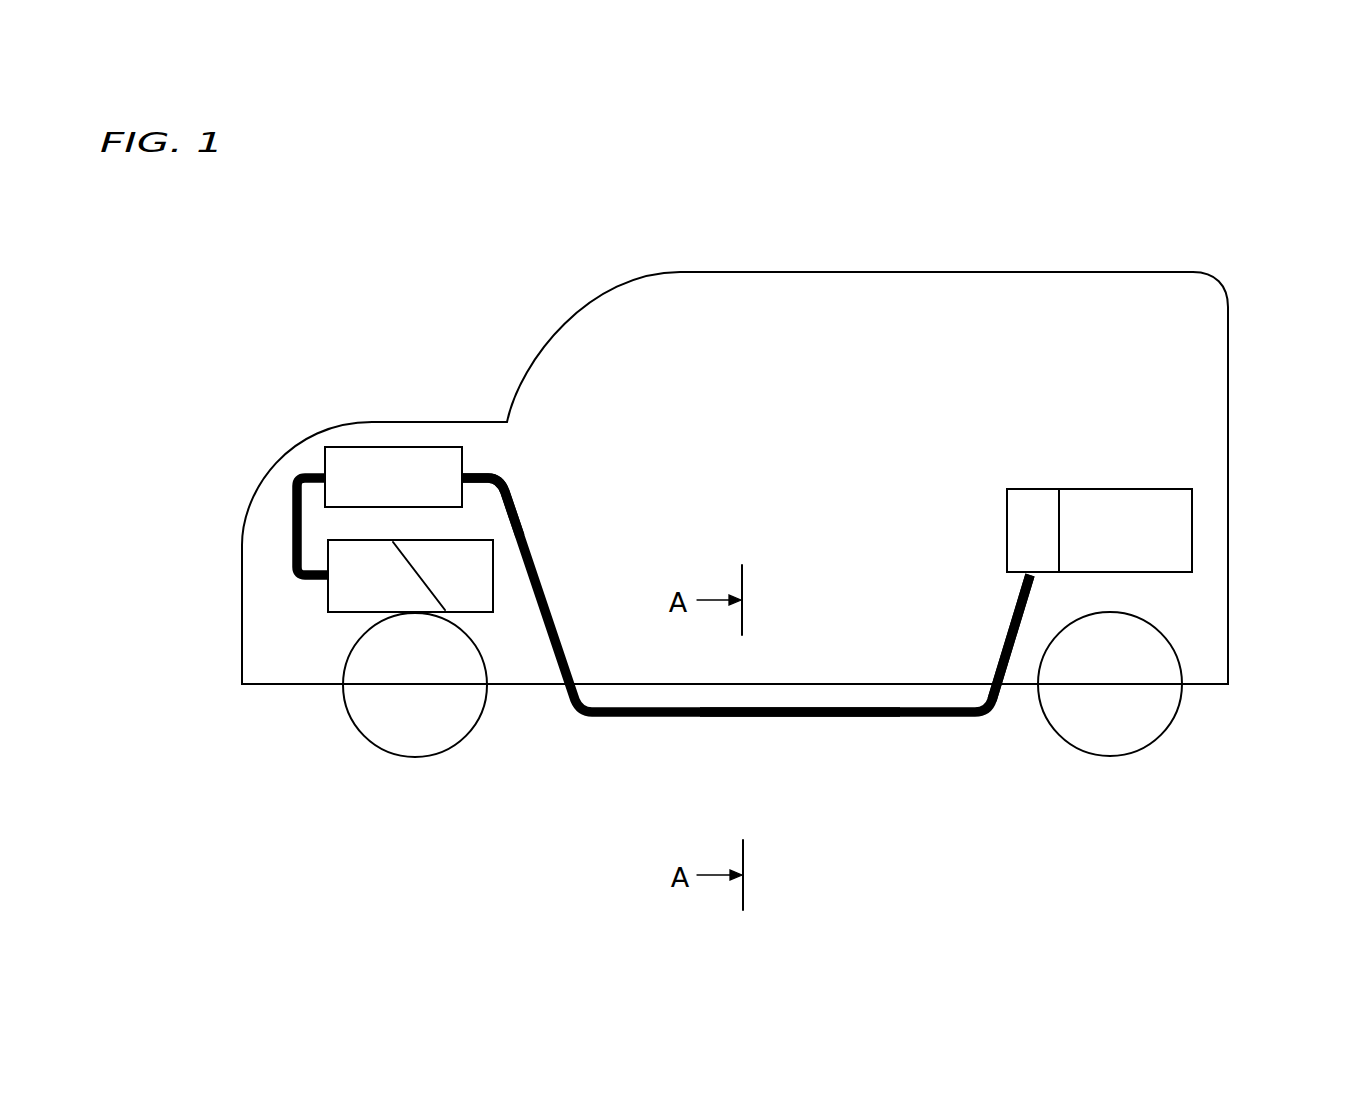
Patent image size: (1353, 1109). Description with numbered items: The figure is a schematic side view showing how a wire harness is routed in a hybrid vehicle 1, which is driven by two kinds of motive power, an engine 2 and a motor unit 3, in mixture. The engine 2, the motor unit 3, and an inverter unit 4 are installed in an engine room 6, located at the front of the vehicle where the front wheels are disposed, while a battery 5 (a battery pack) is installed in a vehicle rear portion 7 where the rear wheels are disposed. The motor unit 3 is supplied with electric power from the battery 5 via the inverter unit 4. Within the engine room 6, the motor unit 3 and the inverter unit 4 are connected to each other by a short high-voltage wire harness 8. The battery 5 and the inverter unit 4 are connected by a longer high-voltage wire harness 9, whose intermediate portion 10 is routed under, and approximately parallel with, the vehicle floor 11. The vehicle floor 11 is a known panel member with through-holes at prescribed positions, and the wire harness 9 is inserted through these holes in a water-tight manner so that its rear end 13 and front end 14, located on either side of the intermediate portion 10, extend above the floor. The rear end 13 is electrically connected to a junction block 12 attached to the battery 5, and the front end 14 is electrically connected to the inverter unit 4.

The hybrid vehicle 1 is at (413, 305).
The engine 2 is at (471, 585).
The motor unit 3 is at (343, 590).
The inverter unit 4 is at (360, 465).
The battery 5 is at (1133, 505).
The engine room 6 is at (267, 647).
The vehicle rear portion 7 is at (1198, 603).
The high-voltage wire harness 8 is at (288, 513).
The high-voltage wire harness 9 is at (663, 718).
The intermediate portion 10 is at (805, 720).
The vehicle floor 11 is at (917, 686).
The junction block 12 is at (1020, 505).
The rear end 13 is at (1015, 600).
The front end 14 is at (500, 480).